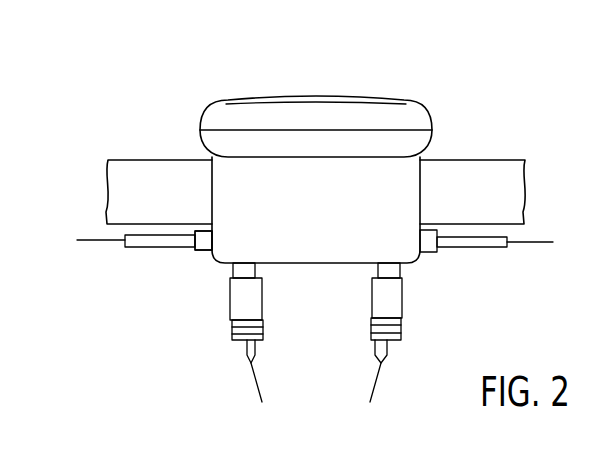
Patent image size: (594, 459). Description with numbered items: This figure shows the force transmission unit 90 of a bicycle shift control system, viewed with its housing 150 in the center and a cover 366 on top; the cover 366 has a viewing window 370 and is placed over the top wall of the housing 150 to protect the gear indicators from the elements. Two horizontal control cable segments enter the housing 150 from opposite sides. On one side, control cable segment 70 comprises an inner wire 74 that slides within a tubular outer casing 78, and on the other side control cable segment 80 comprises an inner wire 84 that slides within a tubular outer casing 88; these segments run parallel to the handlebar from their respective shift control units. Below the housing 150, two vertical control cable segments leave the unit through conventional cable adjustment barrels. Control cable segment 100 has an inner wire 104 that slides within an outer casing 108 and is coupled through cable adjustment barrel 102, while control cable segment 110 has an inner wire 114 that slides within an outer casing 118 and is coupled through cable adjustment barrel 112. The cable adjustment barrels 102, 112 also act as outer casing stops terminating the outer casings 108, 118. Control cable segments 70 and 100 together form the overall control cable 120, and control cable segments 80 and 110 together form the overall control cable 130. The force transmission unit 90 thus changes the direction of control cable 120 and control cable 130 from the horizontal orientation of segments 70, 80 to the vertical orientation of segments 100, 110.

The force transmission unit 90 is at (304, 67).
The viewing window 370 is at (380, 100).
The cover 366 is at (420, 118).
The housing 150 is at (197, 148).
The control cable 120 is at (485, 264).
The inner wire 84 is at (105, 242).
The tubular outer casing 88 is at (145, 248).
The control cable segment 80 is at (193, 257).
The control cable 130 is at (165, 267).
The control cable segment 70 is at (456, 257).
The tubular outer casing 78 is at (498, 248).
The inner wire 74 is at (535, 243).
The control cable segment 110 is at (262, 334).
The cable adjustment barrel 112 is at (263, 305).
The outer casing 118 is at (243, 353).
The inner wire 114 is at (257, 382).
The control cable segment 100 is at (377, 334).
The cable adjustment barrel 102 is at (402, 313).
The outer casing 108 is at (388, 352).
The inner wire 104 is at (377, 382).